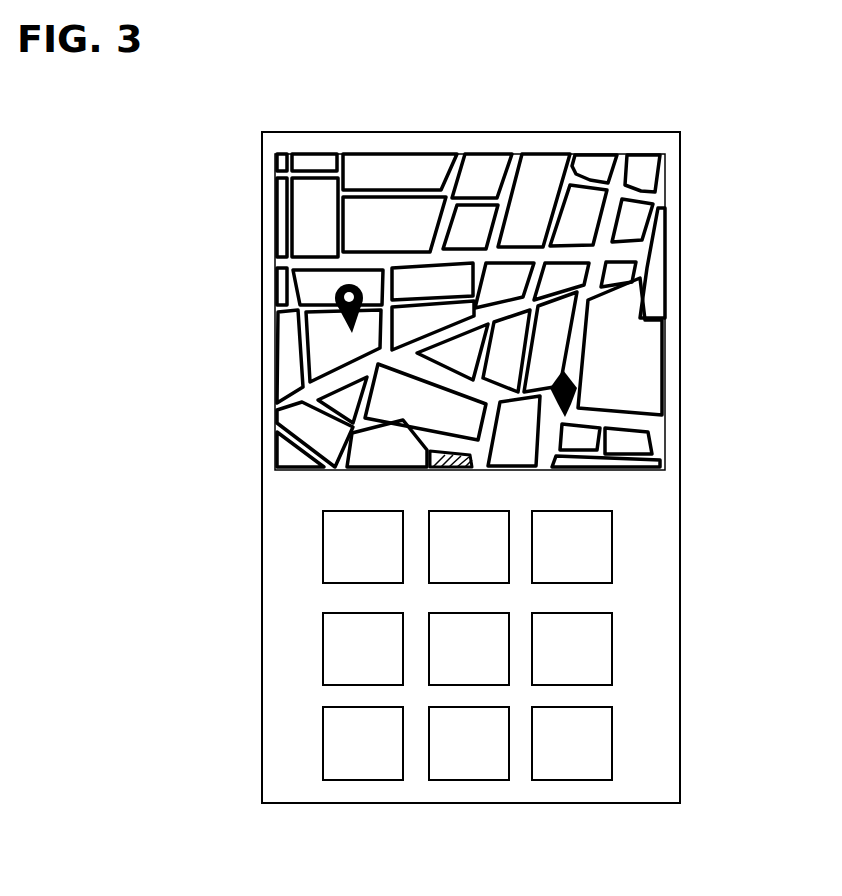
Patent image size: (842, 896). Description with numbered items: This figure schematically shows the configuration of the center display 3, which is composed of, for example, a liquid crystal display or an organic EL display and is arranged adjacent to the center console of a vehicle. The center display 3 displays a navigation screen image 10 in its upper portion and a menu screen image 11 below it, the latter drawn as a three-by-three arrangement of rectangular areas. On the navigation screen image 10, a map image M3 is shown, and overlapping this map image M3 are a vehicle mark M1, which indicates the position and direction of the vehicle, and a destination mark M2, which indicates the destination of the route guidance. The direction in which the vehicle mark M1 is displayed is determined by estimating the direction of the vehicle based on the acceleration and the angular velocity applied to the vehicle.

The center display 3 is at (512, 131).
The navigation screen image 10 is at (460, 312).
The menu screen image 11 is at (635, 550).
The vehicle mark M1 is at (577, 390).
The destination mark M2 is at (300, 350).
The map image M3 is at (318, 203).